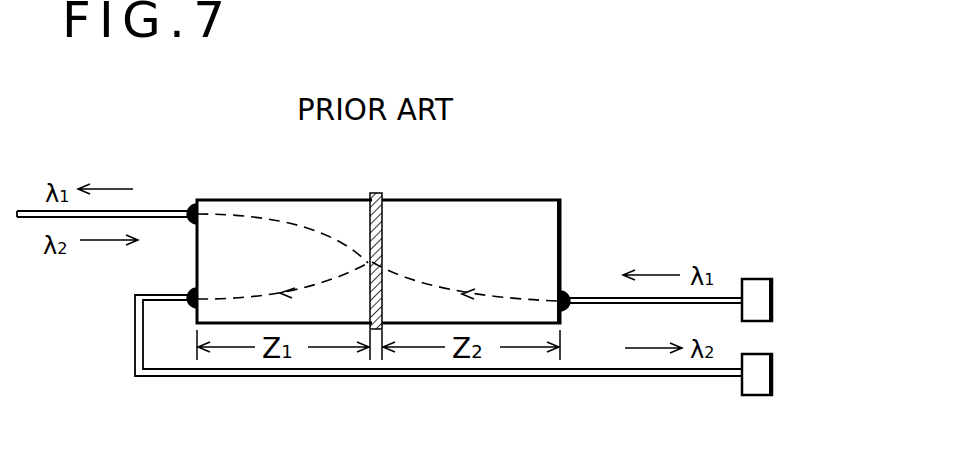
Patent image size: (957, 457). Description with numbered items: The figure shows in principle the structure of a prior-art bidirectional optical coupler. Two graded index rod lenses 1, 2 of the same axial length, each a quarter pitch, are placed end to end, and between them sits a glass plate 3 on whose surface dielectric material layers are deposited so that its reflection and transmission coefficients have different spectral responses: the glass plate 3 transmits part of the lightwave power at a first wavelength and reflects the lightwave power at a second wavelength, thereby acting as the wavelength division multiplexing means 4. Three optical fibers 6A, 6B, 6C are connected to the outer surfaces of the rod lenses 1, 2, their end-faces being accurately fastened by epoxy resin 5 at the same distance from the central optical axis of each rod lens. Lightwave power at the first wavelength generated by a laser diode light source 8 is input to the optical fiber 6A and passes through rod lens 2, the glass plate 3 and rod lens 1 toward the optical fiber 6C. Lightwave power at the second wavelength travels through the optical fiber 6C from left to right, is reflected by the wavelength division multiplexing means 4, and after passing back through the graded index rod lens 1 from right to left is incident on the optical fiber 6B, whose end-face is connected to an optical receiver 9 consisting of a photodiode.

The graded index rod lens 1 is at (286, 200).
The graded index rod lens 2 is at (487, 200).
The glass plate 3 is at (376, 194).
The wavelength division multiplexing means 4 is at (372, 224).
The epoxy resin 5 is at (194, 200).
The optical fiber 6A is at (606, 296).
The optical fiber 6B is at (608, 378).
The optical fiber 6C is at (25, 222).
The laser diode light source 8 is at (772, 298).
The optical receiver 9 is at (772, 374).